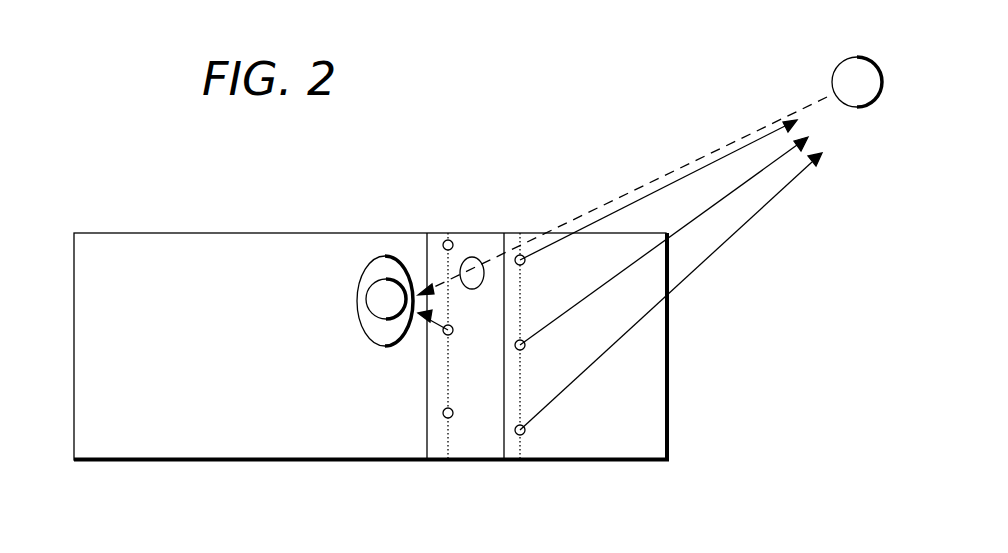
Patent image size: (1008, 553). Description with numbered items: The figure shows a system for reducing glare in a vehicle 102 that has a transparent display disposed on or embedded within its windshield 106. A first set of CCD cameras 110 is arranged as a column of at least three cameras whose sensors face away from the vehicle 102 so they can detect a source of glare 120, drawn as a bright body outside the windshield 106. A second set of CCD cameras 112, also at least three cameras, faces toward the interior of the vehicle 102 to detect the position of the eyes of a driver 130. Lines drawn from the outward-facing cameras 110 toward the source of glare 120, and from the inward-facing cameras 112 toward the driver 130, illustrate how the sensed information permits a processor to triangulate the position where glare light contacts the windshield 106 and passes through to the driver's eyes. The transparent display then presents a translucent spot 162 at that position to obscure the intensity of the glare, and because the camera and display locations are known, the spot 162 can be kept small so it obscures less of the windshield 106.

The vehicle 102 is at (141, 232).
The windshield 106 is at (460, 448).
The first set of CCD cameras 110 is at (524, 434).
The second set of CCD cameras 112 is at (443, 414).
The source of glare 120 is at (838, 64).
The driver 130 is at (385, 262).
The translucent spot 162 is at (474, 258).